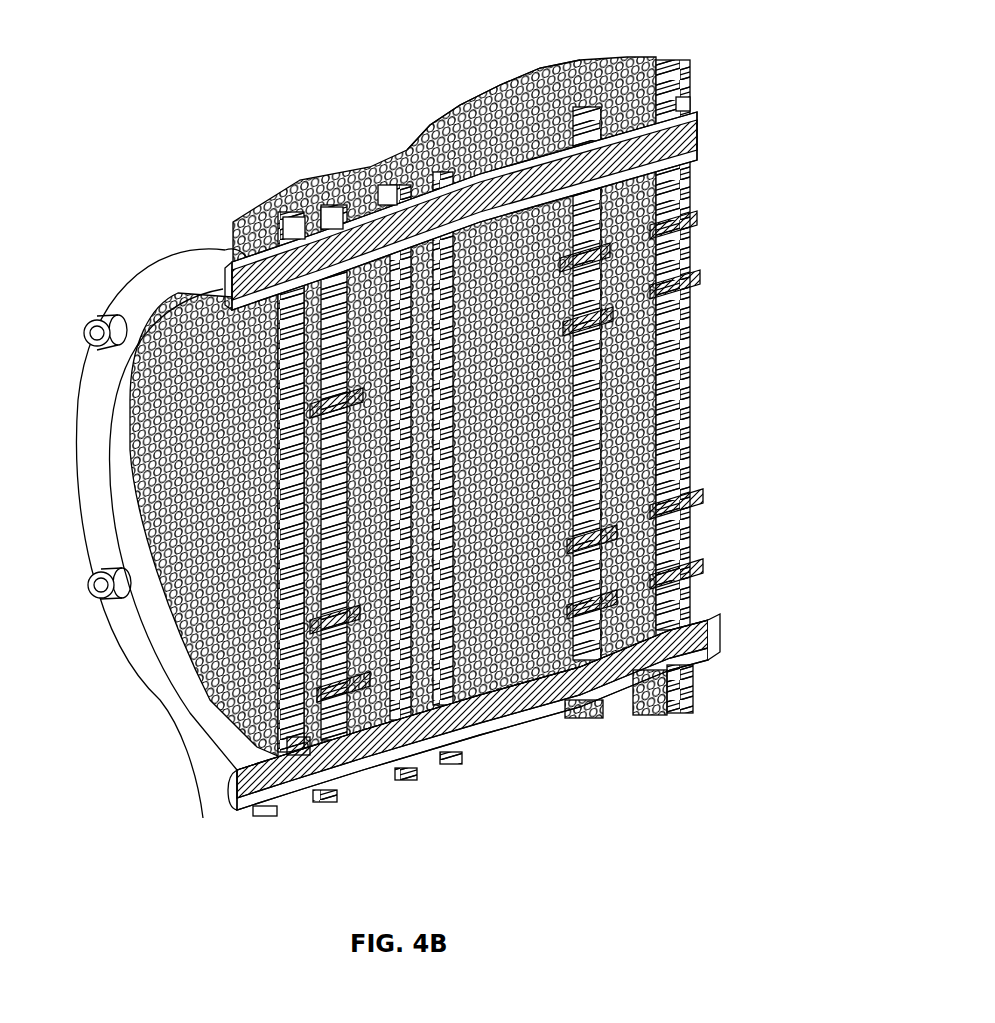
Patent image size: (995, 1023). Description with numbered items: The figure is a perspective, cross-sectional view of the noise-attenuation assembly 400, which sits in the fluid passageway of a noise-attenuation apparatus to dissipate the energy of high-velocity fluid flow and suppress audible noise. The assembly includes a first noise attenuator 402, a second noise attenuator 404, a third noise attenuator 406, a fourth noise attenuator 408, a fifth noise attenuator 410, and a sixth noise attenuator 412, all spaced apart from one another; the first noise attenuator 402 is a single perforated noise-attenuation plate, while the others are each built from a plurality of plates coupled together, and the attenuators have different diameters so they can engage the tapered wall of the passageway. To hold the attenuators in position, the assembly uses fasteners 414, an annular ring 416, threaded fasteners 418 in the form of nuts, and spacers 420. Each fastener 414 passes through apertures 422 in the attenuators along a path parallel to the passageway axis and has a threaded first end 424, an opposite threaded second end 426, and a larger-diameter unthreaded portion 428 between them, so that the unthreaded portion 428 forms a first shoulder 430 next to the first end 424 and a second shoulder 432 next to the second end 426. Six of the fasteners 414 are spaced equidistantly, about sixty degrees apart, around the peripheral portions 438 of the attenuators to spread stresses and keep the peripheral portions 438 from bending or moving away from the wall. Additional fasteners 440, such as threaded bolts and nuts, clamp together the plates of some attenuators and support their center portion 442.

The noise-attenuation assembly 400 is at (122, 55).
The first noise attenuator 402 is at (240, 694).
The second noise attenuator 404 is at (692, 594).
The third noise attenuator 406 is at (340, 787).
The fourth noise attenuator 408 is at (403, 753).
The fifth noise attenuator 410 is at (492, 705).
The sixth noise attenuator 412 is at (586, 648).
The fastener 414 is at (490, 97).
The annular ring 416 is at (160, 273).
The threaded fastener 418 is at (282, 232).
The spacer 420 is at (613, 688).
The aperture 422 is at (602, 64).
The threaded first end 424 is at (237, 795).
The threaded second end 426 is at (710, 640).
The unthreaded portion 428 is at (516, 703).
The first shoulder 430 is at (360, 777).
The second shoulder 432 is at (694, 668).
The peripheral portion 438 is at (407, 157).
The fastener 440 is at (660, 440).
The center portion 442 is at (700, 385).